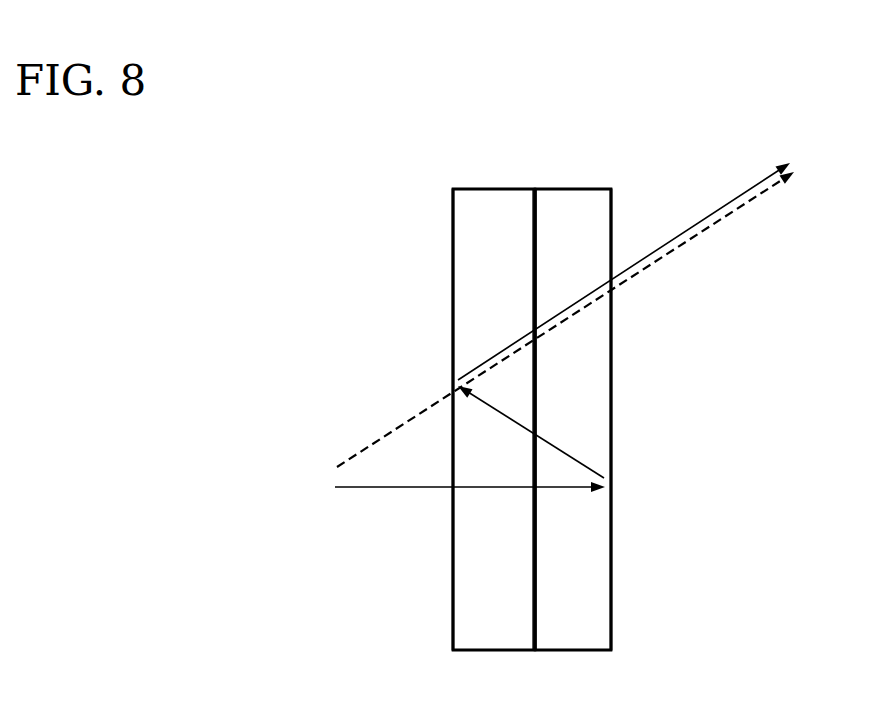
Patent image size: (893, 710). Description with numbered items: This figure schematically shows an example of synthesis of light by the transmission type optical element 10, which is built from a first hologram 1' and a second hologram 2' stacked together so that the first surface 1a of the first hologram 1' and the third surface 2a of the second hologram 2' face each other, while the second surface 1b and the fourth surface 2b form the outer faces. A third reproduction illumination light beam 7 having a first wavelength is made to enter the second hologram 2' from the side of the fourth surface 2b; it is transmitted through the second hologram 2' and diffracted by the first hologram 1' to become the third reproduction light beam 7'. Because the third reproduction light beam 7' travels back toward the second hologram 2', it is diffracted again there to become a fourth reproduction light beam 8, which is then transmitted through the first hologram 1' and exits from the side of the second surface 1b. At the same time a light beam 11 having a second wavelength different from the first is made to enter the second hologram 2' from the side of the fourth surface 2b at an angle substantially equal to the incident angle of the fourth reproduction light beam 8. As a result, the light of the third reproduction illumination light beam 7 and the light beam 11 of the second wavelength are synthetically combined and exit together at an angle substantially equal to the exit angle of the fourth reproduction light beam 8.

The transmission type optical element 10 is at (396, 253).
The first hologram 1' is at (596, 419).
The first surface 1a is at (535, 605).
The second surface 1b is at (611, 625).
The second hologram 2' is at (469, 419).
The third surface 2a is at (533, 627).
The fourth surface 2b is at (453, 622).
The third reproduction illumination light beam 7 is at (470, 453).
The third reproduction light beam 7' is at (551, 425).
The fourth reproduction light beam 8 is at (718, 210).
The light beam of the second wavelength 11 is at (667, 250).